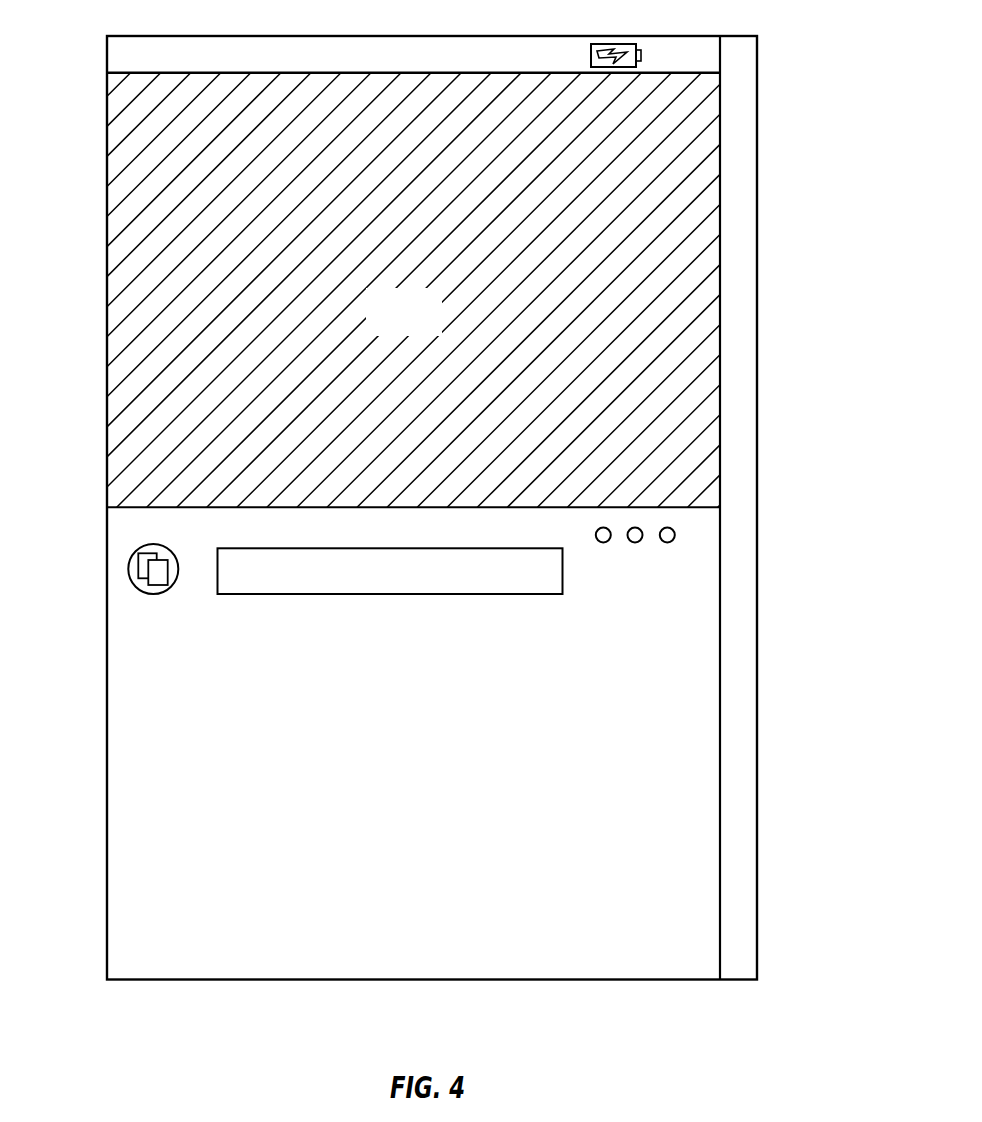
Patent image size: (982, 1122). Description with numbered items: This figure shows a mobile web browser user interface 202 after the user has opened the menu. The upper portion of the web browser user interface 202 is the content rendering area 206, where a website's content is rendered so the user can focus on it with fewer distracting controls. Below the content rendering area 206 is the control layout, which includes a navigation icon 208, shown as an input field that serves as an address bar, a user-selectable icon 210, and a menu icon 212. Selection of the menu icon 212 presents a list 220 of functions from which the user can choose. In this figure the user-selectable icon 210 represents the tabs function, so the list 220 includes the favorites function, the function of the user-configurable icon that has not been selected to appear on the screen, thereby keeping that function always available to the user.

The mobile web browser user interface 202 is at (107, 381).
The content rendering area 206 is at (425, 324).
The navigation icon 208 is at (232, 575).
The user-selectable icon 210 is at (128, 569).
The menu icon 212 is at (635, 543).
The list 220 is at (283, 823).